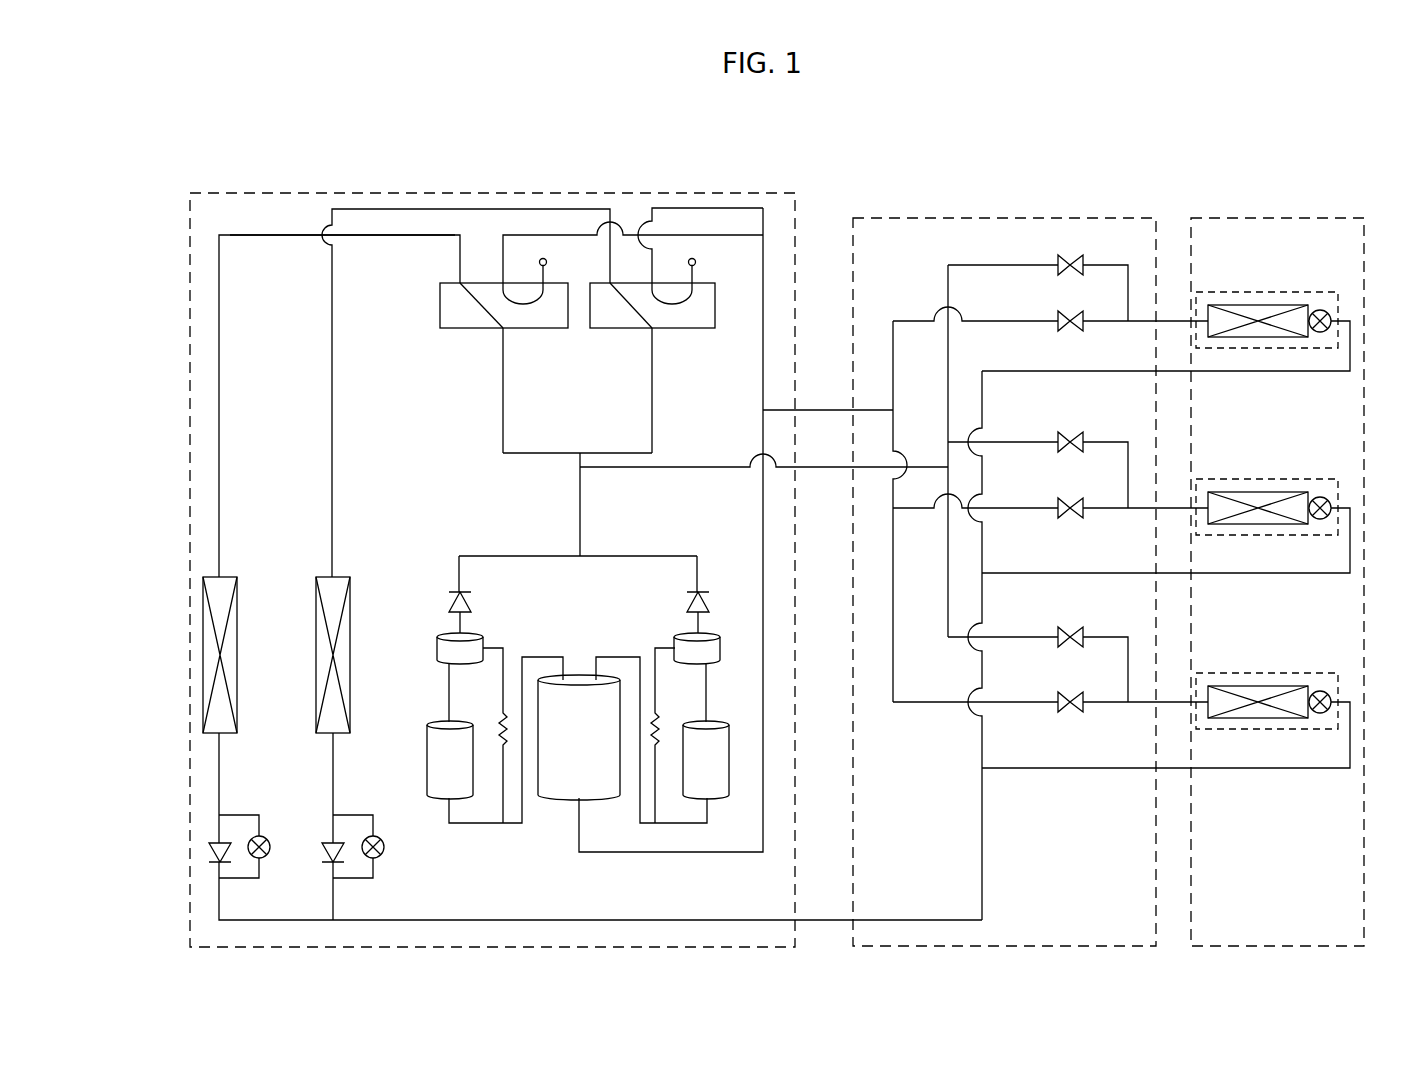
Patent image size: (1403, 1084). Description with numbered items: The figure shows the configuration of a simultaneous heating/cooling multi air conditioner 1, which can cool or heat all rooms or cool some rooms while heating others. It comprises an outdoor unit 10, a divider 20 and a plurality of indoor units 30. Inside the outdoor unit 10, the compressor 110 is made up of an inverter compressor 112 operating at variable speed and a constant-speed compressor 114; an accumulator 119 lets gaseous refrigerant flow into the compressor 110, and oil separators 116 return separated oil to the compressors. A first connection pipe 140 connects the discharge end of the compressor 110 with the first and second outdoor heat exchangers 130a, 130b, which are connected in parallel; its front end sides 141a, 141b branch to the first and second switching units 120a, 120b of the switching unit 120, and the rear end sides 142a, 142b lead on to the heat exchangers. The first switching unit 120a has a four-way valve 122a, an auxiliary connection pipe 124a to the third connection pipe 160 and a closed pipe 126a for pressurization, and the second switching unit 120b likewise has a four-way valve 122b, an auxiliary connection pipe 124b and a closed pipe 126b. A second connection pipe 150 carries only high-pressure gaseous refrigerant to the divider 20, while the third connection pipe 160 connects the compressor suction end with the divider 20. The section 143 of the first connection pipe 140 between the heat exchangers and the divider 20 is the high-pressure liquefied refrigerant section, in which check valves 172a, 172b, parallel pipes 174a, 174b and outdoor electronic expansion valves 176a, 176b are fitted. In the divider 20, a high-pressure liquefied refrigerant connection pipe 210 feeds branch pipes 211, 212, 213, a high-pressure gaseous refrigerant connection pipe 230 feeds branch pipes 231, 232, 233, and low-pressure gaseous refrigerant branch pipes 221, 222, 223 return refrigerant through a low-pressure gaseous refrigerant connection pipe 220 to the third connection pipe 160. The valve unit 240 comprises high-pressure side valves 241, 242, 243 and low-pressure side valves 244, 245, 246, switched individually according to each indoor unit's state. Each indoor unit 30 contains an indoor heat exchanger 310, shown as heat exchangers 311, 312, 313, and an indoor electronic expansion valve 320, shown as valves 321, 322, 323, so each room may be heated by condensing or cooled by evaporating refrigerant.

The simultaneous heating/cooling multi air conditioner 1 is at (823, 191).
The outdoor unit 10 is at (272, 192).
The divider 20 is at (905, 216).
The indoor units 30 is at (1213, 216).
The compressor 110 is at (645, 883).
The inverter compressor 112 is at (464, 800).
The constant-speed compressor 114 is at (697, 800).
The oil separator 116 is at (475, 633).
The accumulator 119 is at (578, 676).
The switching unit 120 is at (620, 403).
The first switching unit 120a is at (560, 339).
The second switching unit 120b is at (622, 339).
The 4-way valve 122a is at (482, 283).
The four-way valve 122b is at (715, 305).
The auxiliary connection pipe 124a is at (545, 235).
The auxiliary connection pipe 124b is at (697, 208).
The closed pipe 126a is at (547, 266).
The closed pipe 126b is at (696, 266).
The first outdoor heat exchanger 130a is at (226, 577).
The second outdoor heat exchanger 130b is at (322, 650).
The first connection pipe 140 is at (208, 296).
The front end side of the first connection pipe 141a is at (503, 347).
The front end side of the first connection pipe 141b is at (655, 352).
The rear end side of the first connection pipe 142a is at (396, 233).
The rear end side of the first connection pipe 142b is at (487, 208).
The high-pressure liquefied refrigerant section 143 is at (690, 920).
The second connection pipe 150 is at (668, 469).
The third connection pipe 160 is at (763, 542).
The check valve 172a is at (209, 853).
The check valve 172b is at (328, 862).
The parallel pipe 174a is at (240, 814).
The parallel pipe 174b is at (363, 814).
The outdoor electronic expansion valve 176a is at (263, 839).
The outdoor electronic expansion valve 176b is at (384, 847).
The high-pressure liquefied refrigerant connection pipe 210 is at (982, 868).
The high-pressure liquefied refrigerant branch pipe 211 is at (1115, 371).
The high-pressure liquefied refrigerant branch pipe 212 is at (1115, 573).
The high-pressure liquefied refrigerant branch pipe 213 is at (1115, 768).
The low-pressure gaseous refrigerant connection pipe 220 is at (893, 540).
The low-pressure gaseous refrigerant branch pipe 221 is at (987, 320).
The low-pressure gaseous refrigerant branch pipe 222 is at (1015, 507).
The low-pressure gaseous refrigerant branch pipe 223 is at (1023, 702).
The high-pressure gaseous refrigerant connection pipe 230 is at (948, 580).
The high-pressure gaseous refrigerant branch pipe 231 is at (959, 265).
The high-pressure gaseous refrigerant branch pipe 232 is at (1015, 442).
The high-pressure gaseous refrigerant branch pipe 233 is at (1023, 637).
The valve unit 240 is at (1058, 200).
The high-pressure side valve 241 is at (1073, 255).
The high-pressure side valve 242 is at (1073, 432).
The high-pressure side valve 243 is at (1073, 627).
The low-pressure side valve 244 is at (1073, 311).
The low-pressure side valve 245 is at (1073, 498).
The low-pressure side valve 246 is at (1073, 692).
The indoor heat exchanger 310 is at (1265, 252).
The indoor heat exchanger 311 is at (1258, 305).
The indoor heat exchanger 312 is at (1258, 492).
The indoor heat exchanger 313 is at (1258, 686).
The indoor electronic expansion valve 320 is at (1327, 252).
The indoor electronic expansion valve 321 is at (1318, 304).
The indoor electronic expansion valve 322 is at (1318, 491).
The indoor electronic expansion valve 323 is at (1318, 685).